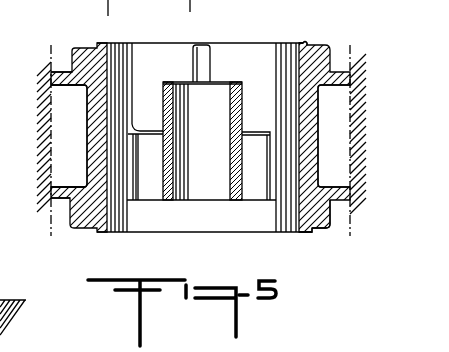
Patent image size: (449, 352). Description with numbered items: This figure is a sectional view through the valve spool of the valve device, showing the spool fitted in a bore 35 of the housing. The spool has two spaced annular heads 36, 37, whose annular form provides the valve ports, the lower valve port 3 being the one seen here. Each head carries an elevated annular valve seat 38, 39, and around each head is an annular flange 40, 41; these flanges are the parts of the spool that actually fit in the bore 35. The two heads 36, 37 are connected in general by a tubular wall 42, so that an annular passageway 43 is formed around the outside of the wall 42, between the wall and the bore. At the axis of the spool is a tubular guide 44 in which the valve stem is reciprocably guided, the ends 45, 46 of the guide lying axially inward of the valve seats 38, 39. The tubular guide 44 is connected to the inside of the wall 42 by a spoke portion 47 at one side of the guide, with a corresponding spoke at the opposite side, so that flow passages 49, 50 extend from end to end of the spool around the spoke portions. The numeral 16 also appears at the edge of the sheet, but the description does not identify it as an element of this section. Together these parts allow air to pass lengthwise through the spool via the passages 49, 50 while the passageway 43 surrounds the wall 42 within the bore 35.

The lower valve port 3 is at (233, 231).
The adjacent figure fragment 16 is at (13, 300).
The bore 35 is at (44, 137).
The annular head 36 is at (325, 45).
The annular head 37 is at (320, 228).
The annular valve seat 38 is at (303, 43).
The annular valve seat 39 is at (302, 233).
The annular flange 40 is at (58, 81).
The annular flange 41 is at (52, 197).
The tubular wall 42 is at (97, 153).
The annular passageway 43 is at (63, 100).
The tubular guide 44 is at (165, 201).
The end of the guide 45 is at (237, 82).
The end of the guide 46 is at (235, 200).
The spoke portion 47 is at (255, 133).
The flow passage 49 is at (137, 137).
The flow passage 50 is at (271, 137).